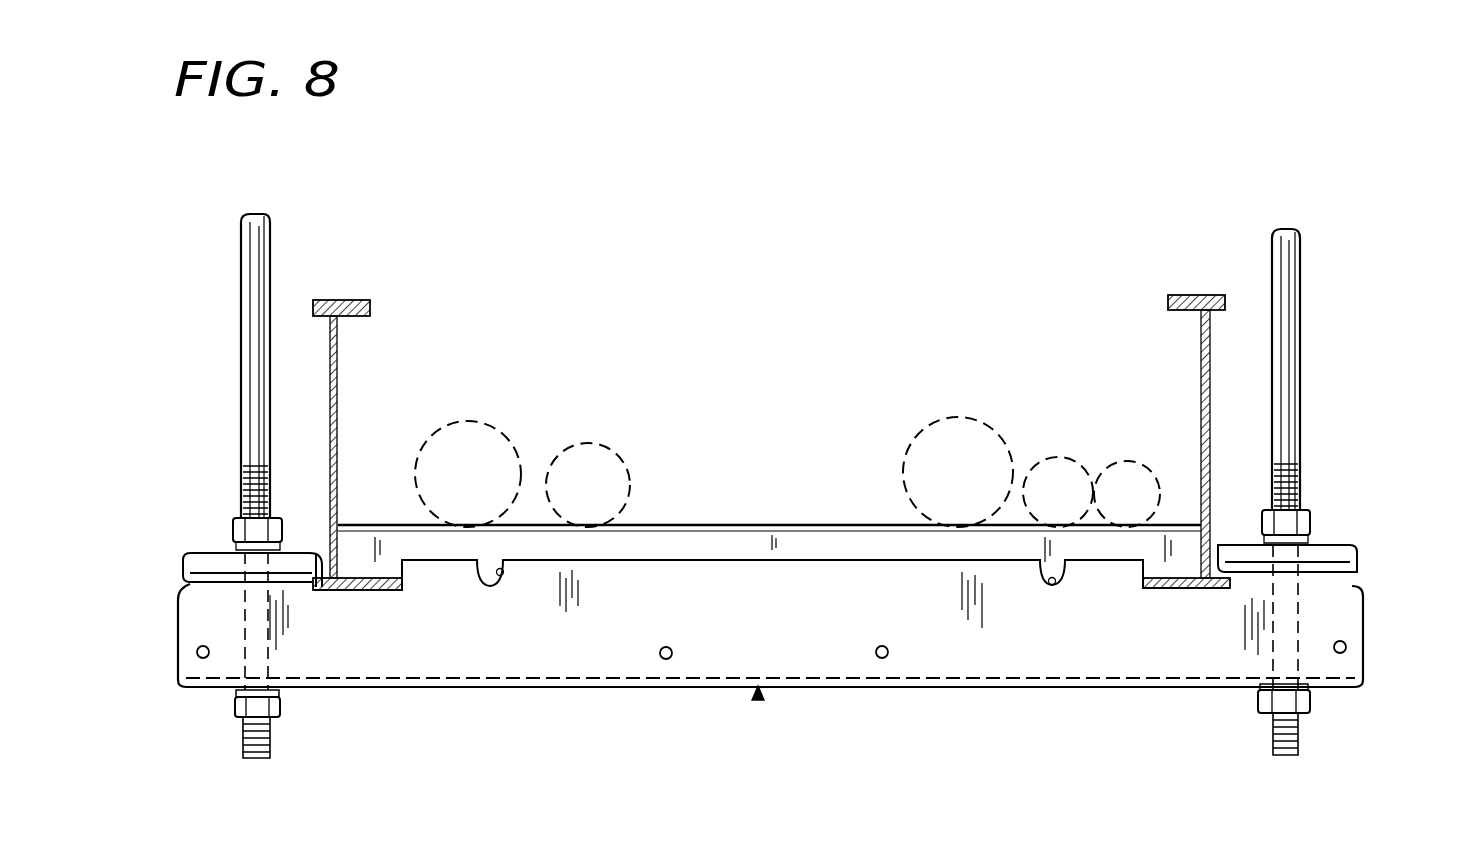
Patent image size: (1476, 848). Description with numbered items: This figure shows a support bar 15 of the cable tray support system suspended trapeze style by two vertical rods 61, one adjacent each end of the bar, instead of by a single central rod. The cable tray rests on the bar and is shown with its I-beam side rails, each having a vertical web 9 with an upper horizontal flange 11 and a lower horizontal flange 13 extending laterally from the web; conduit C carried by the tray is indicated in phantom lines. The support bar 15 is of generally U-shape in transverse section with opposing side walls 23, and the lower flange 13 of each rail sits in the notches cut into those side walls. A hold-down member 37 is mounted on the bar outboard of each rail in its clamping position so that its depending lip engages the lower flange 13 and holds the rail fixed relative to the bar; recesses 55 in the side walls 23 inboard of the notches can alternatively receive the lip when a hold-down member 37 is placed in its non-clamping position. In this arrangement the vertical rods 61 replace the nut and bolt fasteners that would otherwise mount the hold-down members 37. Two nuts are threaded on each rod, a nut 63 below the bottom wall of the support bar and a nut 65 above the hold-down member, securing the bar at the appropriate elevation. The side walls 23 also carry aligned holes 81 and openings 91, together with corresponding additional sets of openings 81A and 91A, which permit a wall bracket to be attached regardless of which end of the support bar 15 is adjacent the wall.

The vertical web 9 is at (338, 400).
The upper horizontal flange 11 is at (358, 300).
The lower horizontal flange 13 is at (330, 592).
The support bar 15 is at (1200, 296).
The side wall 23 is at (1118, 650).
The hold-down member 37 is at (210, 550).
The recess 55 is at (500, 577).
The vertical rod 61 is at (240, 262).
The nut 63 is at (235, 703).
The nut 65 is at (232, 530).
The hole 81 is at (197, 652).
The opening 81A is at (1348, 647).
The opening 91 is at (886, 657).
The opening 91A is at (664, 660).
The conduit C is at (510, 432).